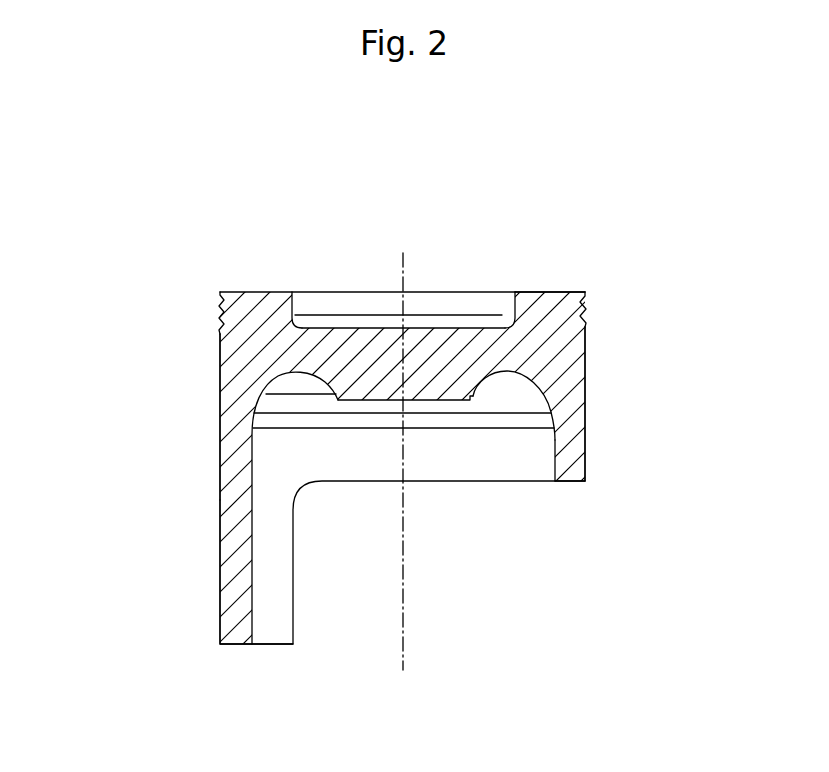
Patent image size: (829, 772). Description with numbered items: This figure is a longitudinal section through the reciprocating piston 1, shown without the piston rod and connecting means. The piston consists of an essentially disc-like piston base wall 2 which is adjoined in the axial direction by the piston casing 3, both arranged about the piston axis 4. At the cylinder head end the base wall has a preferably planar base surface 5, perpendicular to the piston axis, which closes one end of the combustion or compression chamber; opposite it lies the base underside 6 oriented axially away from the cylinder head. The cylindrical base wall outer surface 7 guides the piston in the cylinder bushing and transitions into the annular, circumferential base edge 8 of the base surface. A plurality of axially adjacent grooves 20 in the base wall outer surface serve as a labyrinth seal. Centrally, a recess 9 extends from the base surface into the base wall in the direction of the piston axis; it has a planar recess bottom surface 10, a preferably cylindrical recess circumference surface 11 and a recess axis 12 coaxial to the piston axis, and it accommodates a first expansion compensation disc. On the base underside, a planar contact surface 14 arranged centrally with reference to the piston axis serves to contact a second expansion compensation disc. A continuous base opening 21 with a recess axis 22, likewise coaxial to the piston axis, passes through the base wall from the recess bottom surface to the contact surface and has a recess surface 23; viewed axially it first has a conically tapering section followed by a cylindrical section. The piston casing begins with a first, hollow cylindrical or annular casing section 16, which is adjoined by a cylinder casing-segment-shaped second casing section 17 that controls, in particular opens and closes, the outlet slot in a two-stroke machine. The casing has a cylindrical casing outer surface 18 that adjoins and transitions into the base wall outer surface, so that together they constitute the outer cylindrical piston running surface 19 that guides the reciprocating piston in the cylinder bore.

The reciprocating piston 1 is at (140, 160).
The piston base wall 2 is at (525, 346).
The piston casing 3 is at (570, 432).
The piston axis 4 is at (478, 492).
The base surface 5 is at (548, 290).
The base underside 6 is at (497, 375).
The base wall outer surface 7 is at (588, 333).
The base edge 8 is at (584, 292).
The recess 9 is at (449, 307).
The recess bottom surface 10 is at (494, 327).
The recess circumference surface 11 is at (512, 309).
The recess axis 12 is at (403, 461).
The contact surface 14 is at (360, 400).
The first annular casing section 16 is at (570, 463).
The second casing section 17 is at (275, 559).
The casing outer surface 18 is at (218, 525).
The piston running surface 19 is at (218, 467).
The grooves 20 is at (222, 328).
The base opening 21 is at (400, 345).
The recess axis 22 is at (403, 672).
The recess surface 23 is at (392, 378).